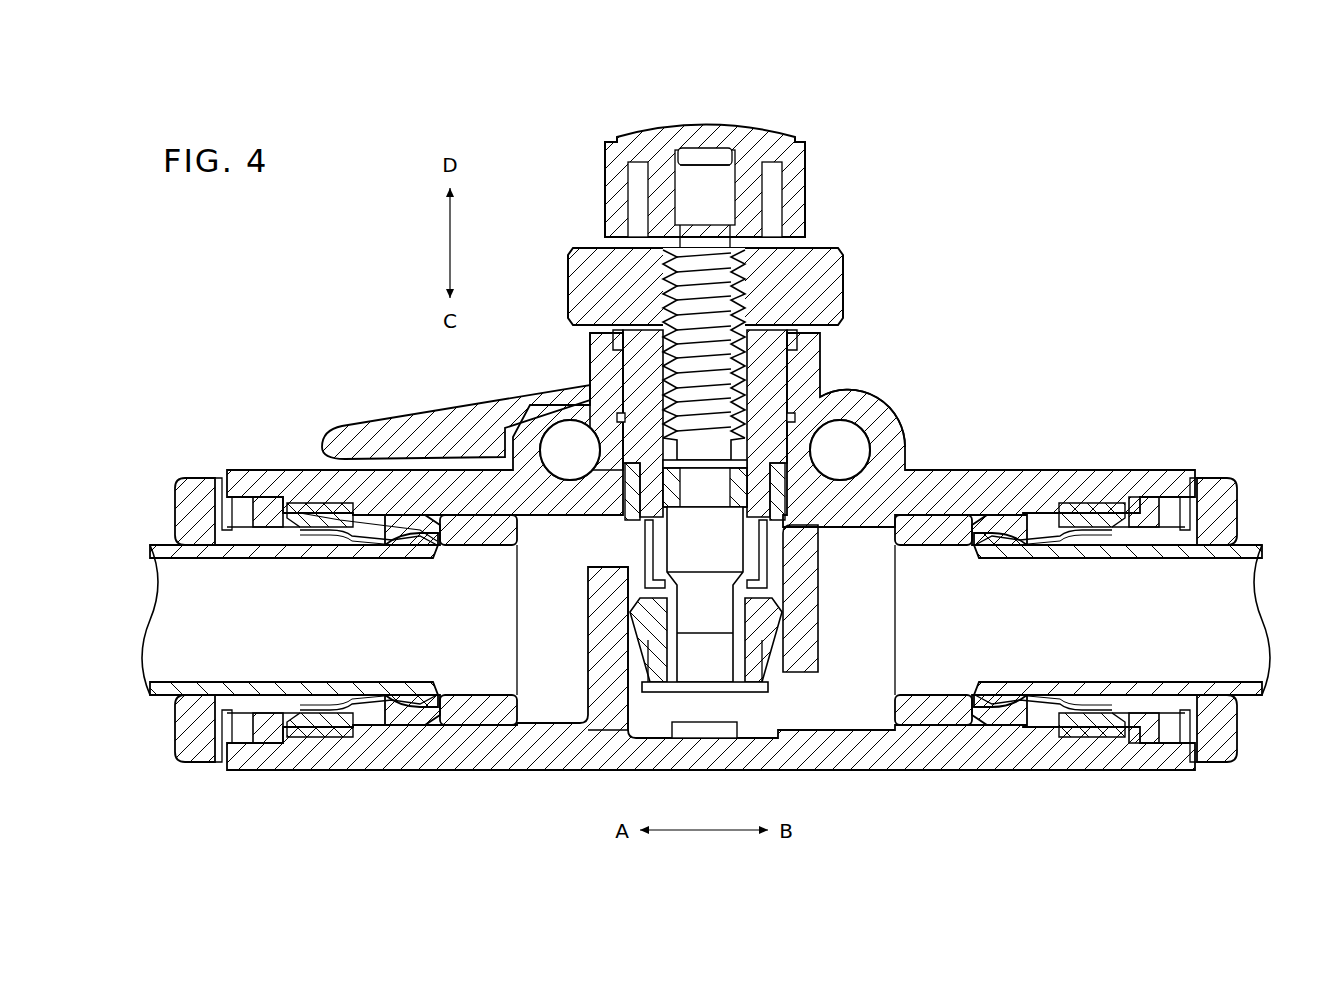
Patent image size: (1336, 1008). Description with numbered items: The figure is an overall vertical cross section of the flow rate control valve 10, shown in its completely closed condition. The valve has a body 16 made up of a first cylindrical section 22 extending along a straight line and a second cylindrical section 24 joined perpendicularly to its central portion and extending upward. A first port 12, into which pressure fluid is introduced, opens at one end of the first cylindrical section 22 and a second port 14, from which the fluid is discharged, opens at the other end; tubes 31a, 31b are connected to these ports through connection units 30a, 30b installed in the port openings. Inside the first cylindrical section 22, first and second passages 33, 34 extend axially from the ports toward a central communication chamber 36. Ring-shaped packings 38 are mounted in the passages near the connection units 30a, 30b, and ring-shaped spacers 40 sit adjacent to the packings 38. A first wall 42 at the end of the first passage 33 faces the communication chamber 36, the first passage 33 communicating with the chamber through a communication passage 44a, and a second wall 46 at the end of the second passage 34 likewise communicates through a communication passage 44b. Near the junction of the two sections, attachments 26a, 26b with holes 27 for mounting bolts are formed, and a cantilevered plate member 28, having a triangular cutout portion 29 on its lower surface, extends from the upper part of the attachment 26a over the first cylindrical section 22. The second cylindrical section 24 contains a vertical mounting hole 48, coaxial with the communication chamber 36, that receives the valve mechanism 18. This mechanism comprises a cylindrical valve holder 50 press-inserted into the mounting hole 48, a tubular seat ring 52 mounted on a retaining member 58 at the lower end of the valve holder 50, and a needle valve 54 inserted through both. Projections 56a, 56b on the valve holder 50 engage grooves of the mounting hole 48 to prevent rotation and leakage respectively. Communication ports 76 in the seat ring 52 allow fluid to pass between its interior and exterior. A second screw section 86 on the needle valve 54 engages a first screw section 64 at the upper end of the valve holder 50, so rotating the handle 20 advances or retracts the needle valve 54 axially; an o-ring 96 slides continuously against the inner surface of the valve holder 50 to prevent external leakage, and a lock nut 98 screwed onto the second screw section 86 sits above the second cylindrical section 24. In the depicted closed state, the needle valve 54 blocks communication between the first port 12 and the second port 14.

The flow rate control valve 10 is at (1047, 158).
The first port 12 is at (287, 660).
The second port 14 is at (1114, 660).
The body 16 is at (1020, 466).
The valve mechanism 18 is at (814, 392).
The handle 20 is at (692, 132).
The first cylindrical section 22 is at (256, 468).
The second cylindrical section 24 is at (598, 344).
The attachment 26a is at (546, 420).
The attachment 26b is at (880, 428).
The holes 27 is at (857, 453).
The plate member 28 is at (404, 412).
The cutout portion 29 is at (503, 432).
The connection unit 30a is at (172, 511).
The connection unit 30b is at (1240, 510).
The tube 31a is at (176, 553).
The tube 31b is at (1238, 553).
The first passage 33 is at (547, 740).
The second passage 34 is at (845, 740).
The communication chamber 36 is at (706, 706).
The ring-shaped packing 38 is at (416, 714).
The ring-shaped spacer 40 is at (486, 718).
The first wall 42 is at (598, 638).
The communication passage 44a is at (606, 550).
The communication passage 44b is at (800, 706).
The second wall 46 is at (806, 606).
The mounting hole 48 is at (852, 392).
The valve holder 50 is at (792, 378).
The seat ring 52 is at (774, 582).
The needle valve 54 is at (690, 697).
The projection 56a is at (622, 340).
The projection 56b is at (600, 366).
The retaining member 58 is at (818, 527).
The first screw section 64 is at (666, 268).
The communication ports 76 is at (648, 546).
The second screw section 86 is at (722, 290).
The o-ring 96 is at (690, 486).
The lock nut 98 is at (818, 256).